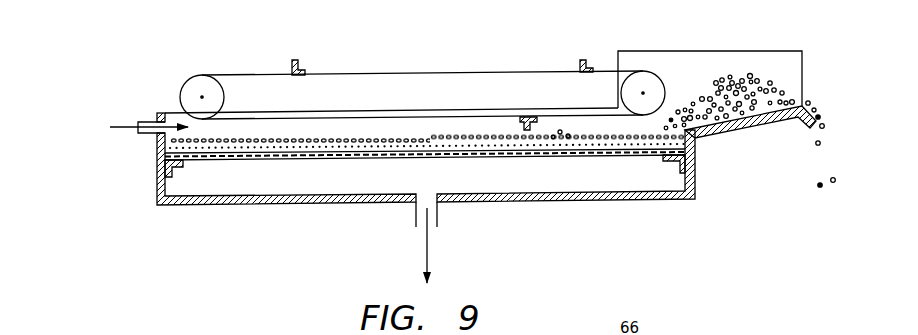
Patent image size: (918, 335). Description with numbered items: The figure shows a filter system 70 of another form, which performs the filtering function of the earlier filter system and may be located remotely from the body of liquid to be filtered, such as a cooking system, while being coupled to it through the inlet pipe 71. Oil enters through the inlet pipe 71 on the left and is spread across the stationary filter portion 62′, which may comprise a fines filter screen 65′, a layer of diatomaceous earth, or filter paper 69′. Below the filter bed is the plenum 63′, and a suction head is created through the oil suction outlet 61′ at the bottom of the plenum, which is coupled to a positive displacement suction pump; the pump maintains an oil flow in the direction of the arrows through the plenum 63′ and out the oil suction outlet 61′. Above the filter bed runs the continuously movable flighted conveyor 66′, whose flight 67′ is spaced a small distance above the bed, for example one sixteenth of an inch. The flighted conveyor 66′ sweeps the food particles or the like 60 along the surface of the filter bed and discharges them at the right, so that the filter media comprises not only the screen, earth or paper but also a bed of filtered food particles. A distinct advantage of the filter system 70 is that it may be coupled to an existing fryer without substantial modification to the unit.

The food particles 60 is at (820, 166).
The oil suction outlet 61′ is at (438, 220).
The stationary filter portion 62′ is at (238, 158).
The plenum 63′ is at (548, 208).
The fines filter screen 65′ is at (390, 146).
The flighted conveyor 66′ is at (398, 72).
The flight 67′ is at (298, 69).
The filter paper 69′ is at (562, 127).
The filter system 70 is at (472, 167).
The inlet pipe 71 is at (143, 120).